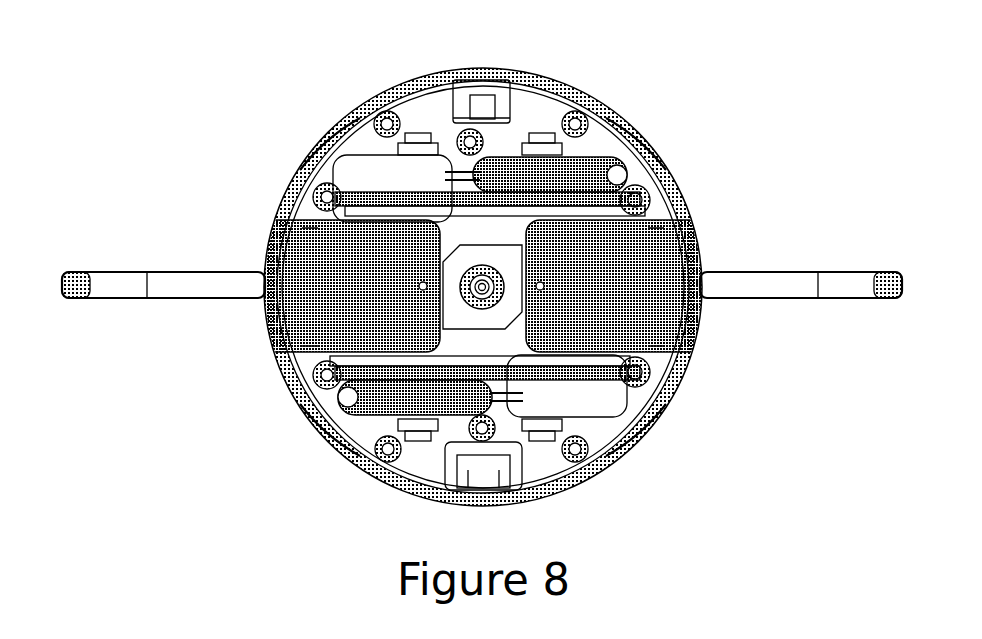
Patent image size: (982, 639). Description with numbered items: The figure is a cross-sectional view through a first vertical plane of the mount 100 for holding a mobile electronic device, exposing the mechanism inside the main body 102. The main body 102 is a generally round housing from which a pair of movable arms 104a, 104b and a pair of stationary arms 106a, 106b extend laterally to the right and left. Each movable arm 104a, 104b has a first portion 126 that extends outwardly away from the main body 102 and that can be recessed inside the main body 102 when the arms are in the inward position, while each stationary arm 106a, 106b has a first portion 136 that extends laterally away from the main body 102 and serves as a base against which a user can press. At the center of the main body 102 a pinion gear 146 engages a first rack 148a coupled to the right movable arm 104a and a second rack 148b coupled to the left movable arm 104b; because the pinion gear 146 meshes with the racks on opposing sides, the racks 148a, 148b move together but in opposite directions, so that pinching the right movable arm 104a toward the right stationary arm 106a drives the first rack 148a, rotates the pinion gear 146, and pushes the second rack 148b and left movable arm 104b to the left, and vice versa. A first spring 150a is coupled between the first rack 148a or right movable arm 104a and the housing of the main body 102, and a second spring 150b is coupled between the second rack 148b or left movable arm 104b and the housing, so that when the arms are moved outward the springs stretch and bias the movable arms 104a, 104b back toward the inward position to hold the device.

The mount 100 is at (901, 153).
The main body 102 is at (418, 487).
The first movable arm 104a is at (678, 235).
The second movable arm 104b is at (303, 257).
The first stationary arm 106a is at (847, 282).
The second stationary arm 106b is at (173, 285).
The first portion of movable arm 126 is at (288, 340).
The first portion of stationary arm 136 is at (138, 292).
The pinion gear 146 is at (465, 262).
The first rack 148a is at (490, 353).
The second rack 148b is at (487, 220).
The first spring 150a is at (378, 400).
The second spring 150b is at (592, 165).